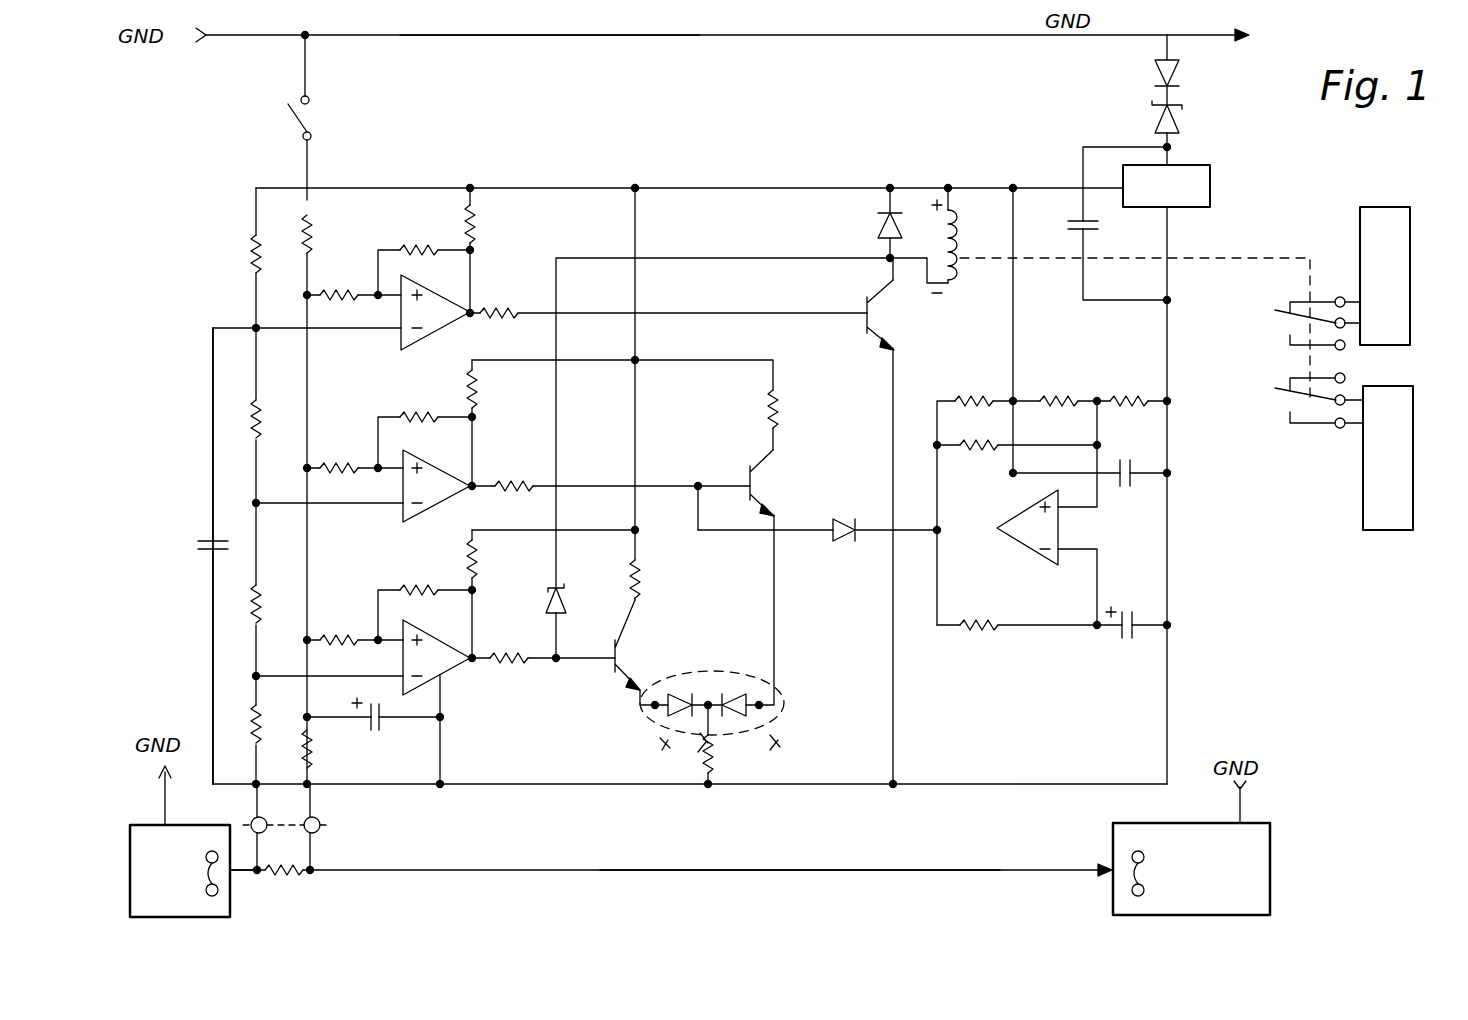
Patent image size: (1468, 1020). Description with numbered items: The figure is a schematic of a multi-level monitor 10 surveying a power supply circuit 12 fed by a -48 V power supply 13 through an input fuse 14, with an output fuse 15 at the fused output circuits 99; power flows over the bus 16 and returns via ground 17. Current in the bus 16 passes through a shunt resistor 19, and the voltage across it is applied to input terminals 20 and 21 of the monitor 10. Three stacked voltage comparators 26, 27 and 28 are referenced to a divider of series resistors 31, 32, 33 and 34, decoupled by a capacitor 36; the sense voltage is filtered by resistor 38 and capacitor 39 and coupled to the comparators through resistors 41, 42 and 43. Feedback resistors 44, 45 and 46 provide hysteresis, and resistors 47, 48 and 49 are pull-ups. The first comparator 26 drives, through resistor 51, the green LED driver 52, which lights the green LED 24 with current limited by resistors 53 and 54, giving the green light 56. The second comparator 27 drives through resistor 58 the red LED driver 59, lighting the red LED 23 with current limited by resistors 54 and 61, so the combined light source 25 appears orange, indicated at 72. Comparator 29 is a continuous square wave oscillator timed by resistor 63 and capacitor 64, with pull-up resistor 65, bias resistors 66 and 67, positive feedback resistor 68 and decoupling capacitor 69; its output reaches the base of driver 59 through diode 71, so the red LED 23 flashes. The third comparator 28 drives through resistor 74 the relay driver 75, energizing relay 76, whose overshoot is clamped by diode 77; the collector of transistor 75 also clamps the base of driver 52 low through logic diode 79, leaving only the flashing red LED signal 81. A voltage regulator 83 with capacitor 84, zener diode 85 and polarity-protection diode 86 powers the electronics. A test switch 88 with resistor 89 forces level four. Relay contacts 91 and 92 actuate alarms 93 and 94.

The multi-level monitor 10 is at (294, 450).
The power supply circuit 12 is at (241, 880).
The power supply 13 is at (144, 825).
The fuse 14 is at (212, 852).
The fuse 15 is at (1128, 862).
The bus 16 is at (726, 866).
The ground 17 is at (530, 40).
The shunt resistor 19 is at (284, 875).
The input terminal 20 is at (264, 822).
The input terminal 21 is at (318, 818).
The red LED 23 is at (760, 711).
The green LED 24 is at (652, 708).
The combined light source 25 is at (748, 659).
The voltage comparator 26 is at (418, 636).
The voltage comparator 27 is at (458, 458).
The voltage comparator 28 is at (460, 283).
The square wave oscillator comparator 29 is at (1022, 562).
The resistor 31 is at (264, 722).
The resistor 32 is at (268, 600).
The resistor 33 is at (268, 418).
The resistor 34 is at (244, 258).
The capacitor 36 is at (200, 538).
The resistor 38 is at (313, 758).
The capacitor 39 is at (384, 736).
The resistor 41 is at (350, 612).
The resistor 42 is at (356, 440).
The resistor 43 is at (352, 284).
The feedback resistor 44 is at (414, 592).
The feedback resistor 45 is at (408, 412).
The feedback resistor 46 is at (412, 236).
The pull-up resistor 47 is at (476, 557).
The pull-up resistor 48 is at (480, 398).
The pull-up resistor 49 is at (480, 226).
The resistor 51 is at (500, 664).
The green LED driver 52 is at (620, 652).
The resistor 53 is at (648, 583).
The resistor 54 is at (696, 756).
The green light 56 is at (662, 744).
The resistor 58 is at (506, 486).
The red LED driver 59 is at (754, 482).
The resistor 61 is at (764, 396).
The resistor 63 is at (986, 632).
The capacitor 64 is at (1134, 636).
The pull-up resistor 65 is at (986, 392).
The resistor 66 is at (1072, 392).
The resistor 67 is at (1142, 394).
The resistor 68 is at (982, 452).
The capacitor 69 is at (1144, 445).
The diode 71 is at (848, 550).
The orange color 72 is at (724, 748).
The resistor 74 is at (522, 290).
The relay driver 75 is at (882, 316).
The relay 76 is at (960, 236).
The diode 77 is at (876, 226).
The logic diode 79 is at (574, 596).
The red LED signal 81 is at (773, 746).
The voltage regulator 83 is at (1210, 178).
The capacitor 84 is at (1068, 222).
The zener diode 85 is at (1185, 122).
The diode 86 is at (1148, 70).
The test switch 88 is at (317, 110).
The resistor 89 is at (312, 232).
The relay contacts 91 is at (1288, 404).
The relay contacts 92 is at (1284, 330).
The alarm 93 is at (1360, 491).
The alarm 94 is at (1360, 242).
The fused output circuits 99 is at (1190, 834).